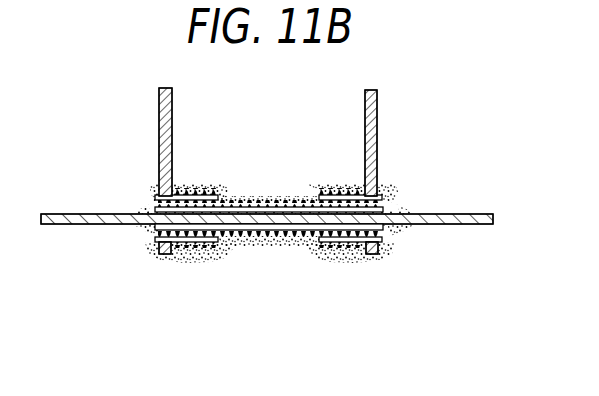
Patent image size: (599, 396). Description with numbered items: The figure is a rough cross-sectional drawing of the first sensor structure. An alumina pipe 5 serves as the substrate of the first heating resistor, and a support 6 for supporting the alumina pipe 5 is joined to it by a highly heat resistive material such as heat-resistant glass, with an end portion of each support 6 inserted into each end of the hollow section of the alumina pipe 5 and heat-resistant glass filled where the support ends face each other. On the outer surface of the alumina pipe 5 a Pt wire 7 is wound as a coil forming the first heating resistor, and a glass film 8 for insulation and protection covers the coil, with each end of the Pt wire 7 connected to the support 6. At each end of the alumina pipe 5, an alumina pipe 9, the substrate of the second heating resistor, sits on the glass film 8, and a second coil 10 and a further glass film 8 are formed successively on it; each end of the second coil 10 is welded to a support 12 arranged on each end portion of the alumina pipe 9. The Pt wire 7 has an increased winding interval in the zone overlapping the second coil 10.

The alumina pipe 5 is at (381, 208).
The support 6 is at (438, 224).
The Pt wire 7 is at (278, 199).
The glass film 8 is at (229, 190).
The alumina pipe 9 is at (378, 187).
The second coil 10 is at (333, 261).
The support 12 is at (158, 133).